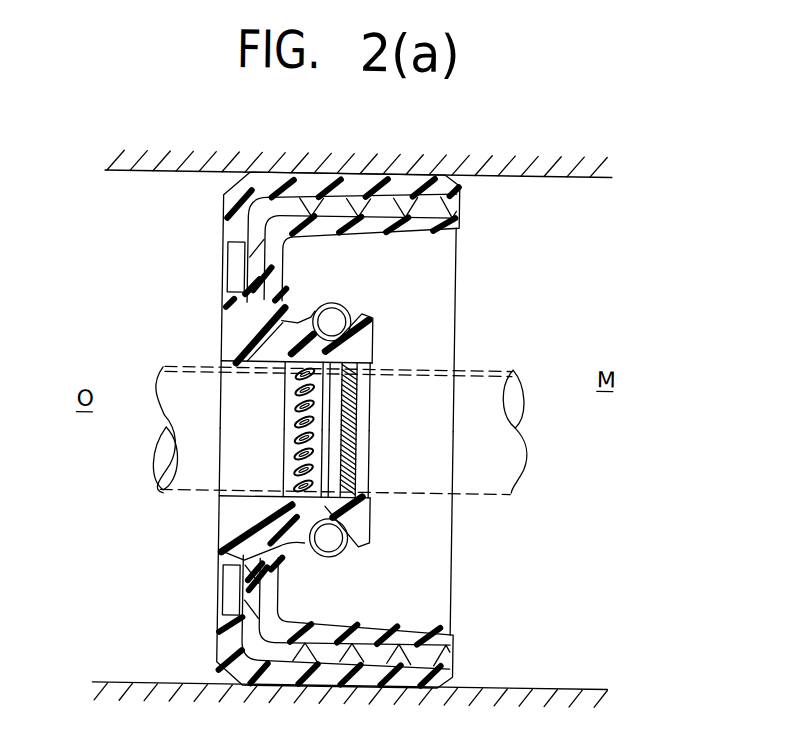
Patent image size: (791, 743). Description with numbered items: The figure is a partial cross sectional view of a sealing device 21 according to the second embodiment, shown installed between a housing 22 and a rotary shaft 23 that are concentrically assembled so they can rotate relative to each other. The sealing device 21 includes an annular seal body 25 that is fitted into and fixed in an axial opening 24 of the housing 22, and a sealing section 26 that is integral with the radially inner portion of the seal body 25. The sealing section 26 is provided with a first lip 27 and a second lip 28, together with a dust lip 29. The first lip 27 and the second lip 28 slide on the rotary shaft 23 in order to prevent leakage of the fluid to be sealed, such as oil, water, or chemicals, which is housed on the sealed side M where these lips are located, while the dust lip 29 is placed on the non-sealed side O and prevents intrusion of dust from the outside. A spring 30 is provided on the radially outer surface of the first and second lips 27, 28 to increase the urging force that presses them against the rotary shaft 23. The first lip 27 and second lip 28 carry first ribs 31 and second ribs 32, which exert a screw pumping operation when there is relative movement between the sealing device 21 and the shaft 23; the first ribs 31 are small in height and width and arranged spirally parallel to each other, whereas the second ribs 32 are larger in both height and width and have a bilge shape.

The sealing device 21 is at (331, 401).
The housing 22 is at (206, 141).
The rotary shaft 23 is at (196, 394).
The axial opening 24 is at (197, 170).
The seal body 25 is at (374, 196).
The sealing section 26 is at (260, 318).
The first lip 27 is at (372, 333).
The second lip 28 is at (372, 324).
The dust lip 29 is at (246, 358).
The spring 30 is at (352, 303).
The first ribs 31 is at (373, 393).
The second ribs 32 is at (323, 407).